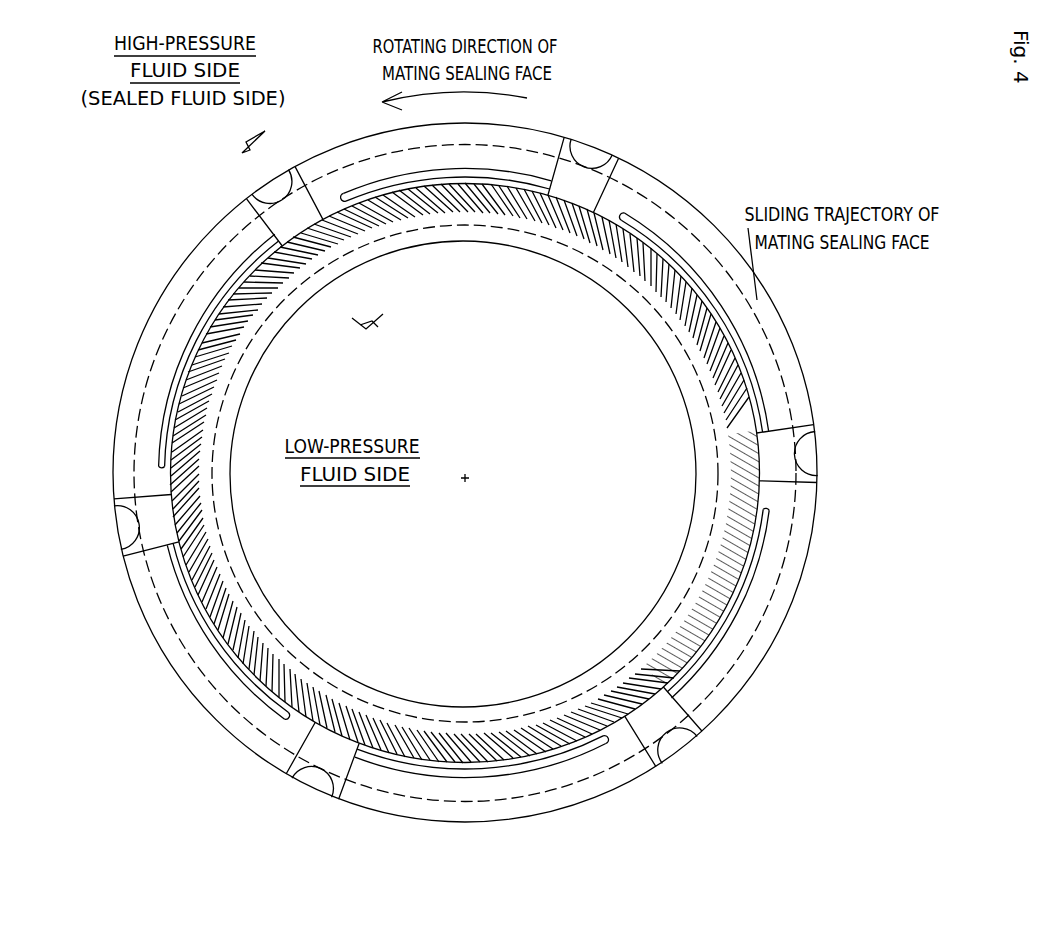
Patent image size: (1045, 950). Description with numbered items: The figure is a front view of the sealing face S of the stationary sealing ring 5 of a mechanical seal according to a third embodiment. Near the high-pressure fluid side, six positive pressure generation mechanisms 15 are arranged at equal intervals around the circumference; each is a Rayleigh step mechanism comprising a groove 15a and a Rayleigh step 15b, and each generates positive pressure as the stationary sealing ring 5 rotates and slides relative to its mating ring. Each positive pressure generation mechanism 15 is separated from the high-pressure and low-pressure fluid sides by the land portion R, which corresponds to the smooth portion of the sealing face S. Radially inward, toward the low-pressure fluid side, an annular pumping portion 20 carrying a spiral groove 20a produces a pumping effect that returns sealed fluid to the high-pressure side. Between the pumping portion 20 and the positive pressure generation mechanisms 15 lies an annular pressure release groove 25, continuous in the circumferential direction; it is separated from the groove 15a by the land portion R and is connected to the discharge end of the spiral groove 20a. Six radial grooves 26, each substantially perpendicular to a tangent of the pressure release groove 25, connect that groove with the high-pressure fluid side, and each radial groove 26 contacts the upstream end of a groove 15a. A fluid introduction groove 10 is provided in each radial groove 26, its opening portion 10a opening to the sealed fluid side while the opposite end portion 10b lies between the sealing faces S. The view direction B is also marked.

The stationary sealing ring 5 is at (350, 141).
The fluid introduction groove 10 is at (598, 150).
The opening portion 10a is at (588, 148).
The end portion 10b is at (590, 190).
The positive pressure generation mechanism 15 is at (505, 160).
The groove 15a is at (452, 175).
The Rayleigh step 15b is at (398, 190).
The pumping portion 20 is at (660, 305).
The spiral groove 20a is at (650, 290).
The pressure release groove 25 is at (556, 228).
The radial groove 26 is at (600, 200).
The land portion R is at (703, 243).
The sealing face S is at (766, 322).
The view direction B is at (304, 232).